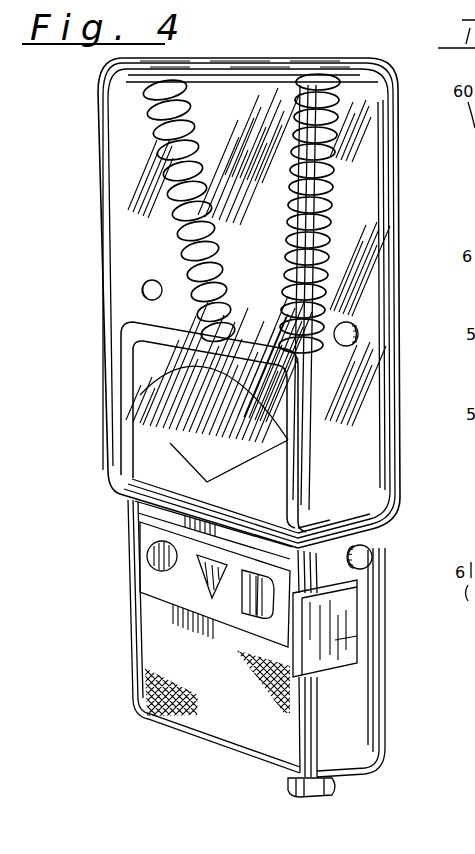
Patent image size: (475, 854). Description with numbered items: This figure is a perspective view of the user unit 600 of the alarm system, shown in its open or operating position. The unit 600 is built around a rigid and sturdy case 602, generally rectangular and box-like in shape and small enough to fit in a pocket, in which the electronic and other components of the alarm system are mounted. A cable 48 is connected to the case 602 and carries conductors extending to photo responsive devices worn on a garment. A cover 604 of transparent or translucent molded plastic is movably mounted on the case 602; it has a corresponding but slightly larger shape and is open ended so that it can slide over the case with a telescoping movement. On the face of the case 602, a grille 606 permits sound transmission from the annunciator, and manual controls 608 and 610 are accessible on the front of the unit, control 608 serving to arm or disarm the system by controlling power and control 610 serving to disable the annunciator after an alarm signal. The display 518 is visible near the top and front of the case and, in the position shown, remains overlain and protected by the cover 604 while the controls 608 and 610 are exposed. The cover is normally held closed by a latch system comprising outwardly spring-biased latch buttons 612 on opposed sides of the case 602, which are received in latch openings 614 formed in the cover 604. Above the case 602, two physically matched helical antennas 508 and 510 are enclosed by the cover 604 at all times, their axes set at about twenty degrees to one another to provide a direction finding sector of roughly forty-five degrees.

The user unit 600 is at (64, 134).
The case 602 is at (362, 730).
The cover 604 is at (387, 207).
The grille 606 is at (197, 700).
The manual control 608 is at (156, 561).
The manual control 610 is at (340, 640).
The latch button 612 is at (360, 555).
The latch opening 614 is at (142, 297).
The display 518 is at (167, 415).
The antenna 508 is at (180, 202).
The antenna 510 is at (333, 190).
The cable 48 is at (325, 793).